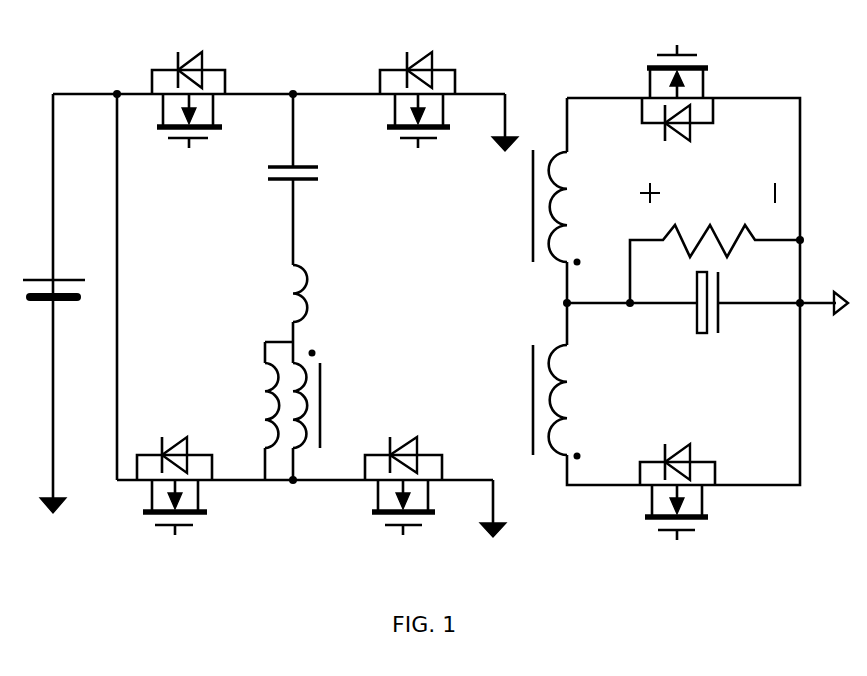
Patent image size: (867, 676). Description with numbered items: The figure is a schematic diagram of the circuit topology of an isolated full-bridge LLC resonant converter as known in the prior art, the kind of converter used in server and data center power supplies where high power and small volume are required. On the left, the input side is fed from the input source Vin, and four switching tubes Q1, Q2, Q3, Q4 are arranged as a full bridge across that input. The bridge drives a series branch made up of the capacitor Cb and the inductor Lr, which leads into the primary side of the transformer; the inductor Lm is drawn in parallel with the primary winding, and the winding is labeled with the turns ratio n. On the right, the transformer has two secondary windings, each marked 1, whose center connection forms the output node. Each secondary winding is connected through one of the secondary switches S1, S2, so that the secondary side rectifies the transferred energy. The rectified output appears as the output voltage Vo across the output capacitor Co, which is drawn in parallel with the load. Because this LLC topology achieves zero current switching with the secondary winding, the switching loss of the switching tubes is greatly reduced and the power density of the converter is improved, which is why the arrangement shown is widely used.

The first primary switch Q1 is at (188, 128).
The second primary switch Q2 is at (417, 128).
The third primary switch Q3 is at (174, 513).
The fourth primary switch Q4 is at (403, 513).
The blocking capacitor Cb is at (282, 200).
The resonant inductor Lr is at (280, 293).
The magnetizing inductance Lm is at (245, 405).
The transformer primary winding turns n is at (325, 399).
The input voltage source Vin is at (60, 266).
The transformer secondary windings 1 is at (566, 305).
The first secondary rectifier switch S1 is at (699, 93).
The second secondary rectifier switch S2 is at (697, 501).
The output voltage Vo is at (707, 196).
The output capacitor Co is at (708, 333).